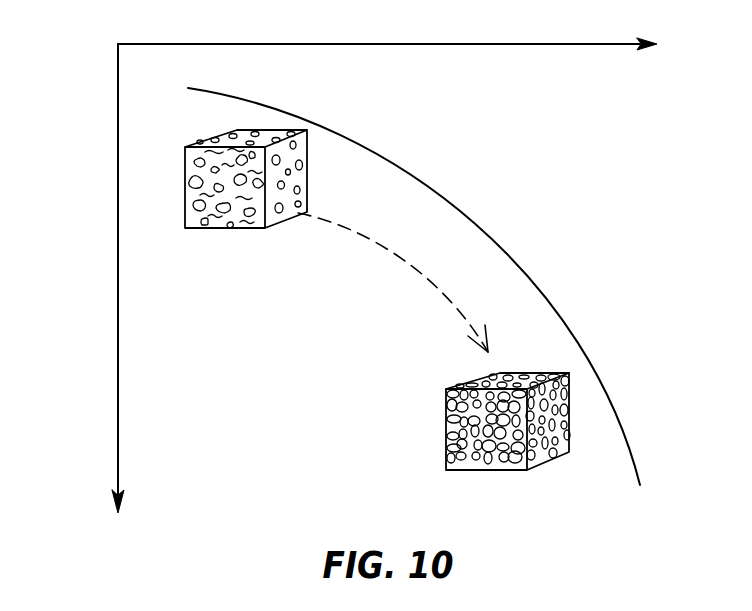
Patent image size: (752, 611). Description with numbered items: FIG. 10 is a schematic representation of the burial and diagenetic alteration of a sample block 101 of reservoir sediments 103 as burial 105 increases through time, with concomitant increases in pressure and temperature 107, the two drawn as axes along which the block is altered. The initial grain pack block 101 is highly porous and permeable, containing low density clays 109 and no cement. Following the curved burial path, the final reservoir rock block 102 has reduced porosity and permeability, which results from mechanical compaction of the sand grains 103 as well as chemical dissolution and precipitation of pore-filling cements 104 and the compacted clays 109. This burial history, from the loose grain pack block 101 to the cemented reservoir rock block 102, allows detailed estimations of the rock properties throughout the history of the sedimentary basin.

The sample block 101 is at (226, 133).
The final reservoir rock block 102 is at (473, 415).
The reservoir sediments 103 is at (323, 178).
The pore-filling cements 104 is at (490, 380).
The burial 105 is at (117, 329).
The pressure and temperature 107 is at (549, 44).
The clays 109 is at (198, 190).